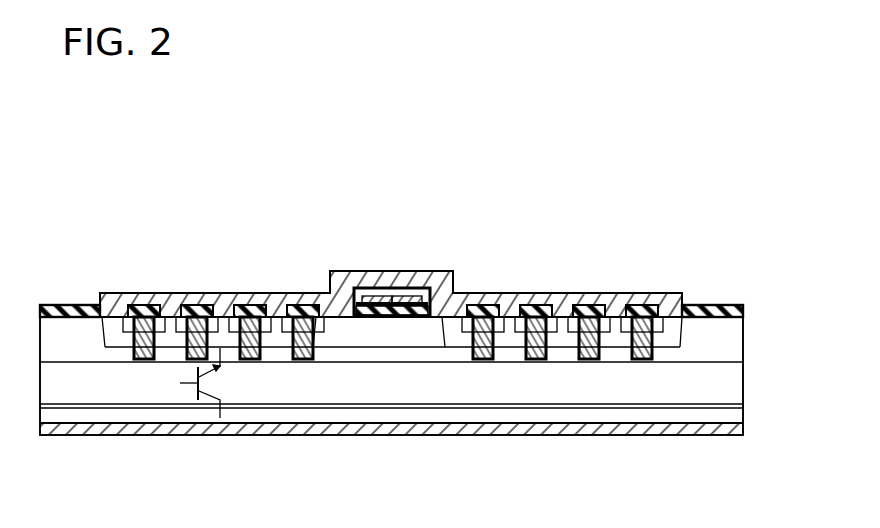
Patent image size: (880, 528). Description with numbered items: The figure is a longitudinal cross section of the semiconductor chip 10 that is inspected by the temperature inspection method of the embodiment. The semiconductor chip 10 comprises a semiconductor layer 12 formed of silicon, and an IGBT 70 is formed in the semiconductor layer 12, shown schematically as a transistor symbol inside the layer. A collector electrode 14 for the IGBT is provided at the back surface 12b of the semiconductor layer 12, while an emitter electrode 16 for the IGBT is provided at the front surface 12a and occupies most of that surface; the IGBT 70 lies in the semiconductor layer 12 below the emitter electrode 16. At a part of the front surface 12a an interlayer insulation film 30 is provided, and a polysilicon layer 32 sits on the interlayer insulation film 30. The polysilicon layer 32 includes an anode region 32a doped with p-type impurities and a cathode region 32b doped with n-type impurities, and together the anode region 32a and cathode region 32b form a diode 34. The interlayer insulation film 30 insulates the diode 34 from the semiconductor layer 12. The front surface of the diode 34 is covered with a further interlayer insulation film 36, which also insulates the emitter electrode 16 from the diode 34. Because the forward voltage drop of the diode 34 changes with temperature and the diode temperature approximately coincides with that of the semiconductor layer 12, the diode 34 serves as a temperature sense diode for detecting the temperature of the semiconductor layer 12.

The semiconductor chip 10 is at (81, 214).
The semiconductor layer 12 is at (747, 317).
The front surface 12a is at (668, 316).
The back surface 12b is at (718, 431).
The collector electrode 14 is at (668, 428).
The emitter electrode 16 is at (617, 300).
The interlayer insulation film 30 is at (422, 239).
The polysilicon layer 32 is at (390, 232).
The anode region 32a is at (378, 296).
The cathode region 32b is at (405, 296).
The diode 34 is at (418, 289).
The interlayer insulation film 36 is at (334, 288).
The IGBT 70 is at (204, 405).